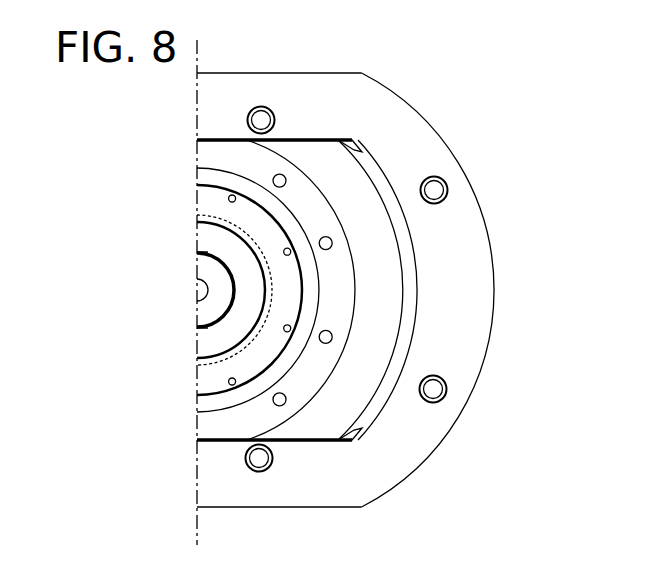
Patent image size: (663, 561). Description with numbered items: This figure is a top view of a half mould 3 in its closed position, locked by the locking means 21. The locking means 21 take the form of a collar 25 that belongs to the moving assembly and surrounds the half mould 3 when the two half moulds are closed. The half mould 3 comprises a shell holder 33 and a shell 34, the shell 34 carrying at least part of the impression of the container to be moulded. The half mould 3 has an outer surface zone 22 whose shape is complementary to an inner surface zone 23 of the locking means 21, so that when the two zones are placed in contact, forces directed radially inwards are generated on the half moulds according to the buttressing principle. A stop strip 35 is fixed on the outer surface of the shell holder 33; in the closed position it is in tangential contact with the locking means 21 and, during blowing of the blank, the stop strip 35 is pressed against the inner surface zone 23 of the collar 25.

The half mould 3 is at (215, 158).
The locking means 21 is at (415, 427).
The outer surface zone 22 is at (382, 165).
The inner surface zone 23 is at (360, 424).
The collar 25 is at (468, 305).
The shell holder 33 is at (305, 200).
The shell 34 is at (210, 203).
The stop strip 35 is at (408, 237).